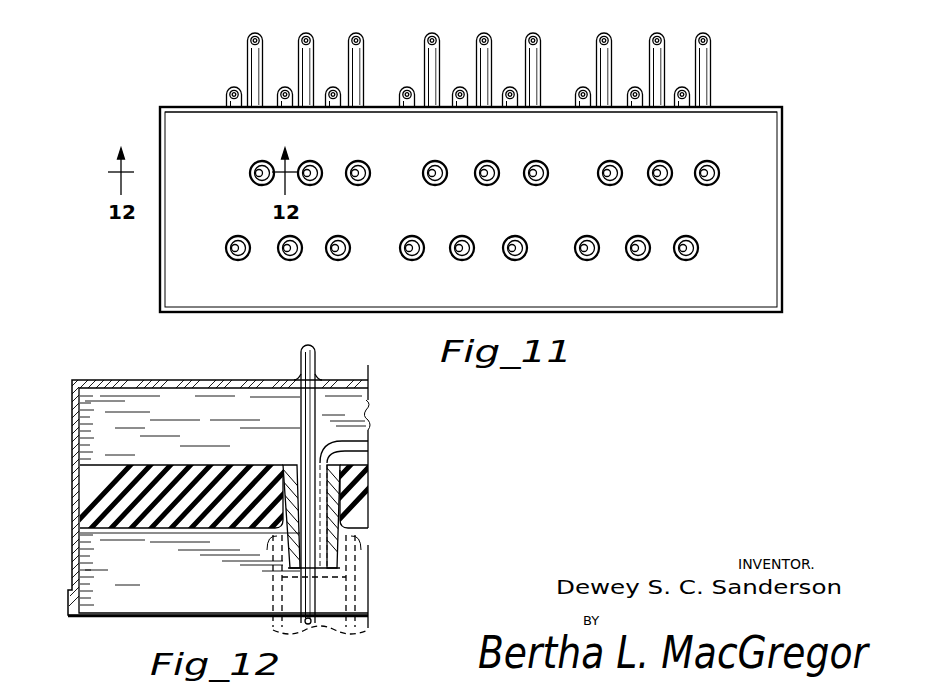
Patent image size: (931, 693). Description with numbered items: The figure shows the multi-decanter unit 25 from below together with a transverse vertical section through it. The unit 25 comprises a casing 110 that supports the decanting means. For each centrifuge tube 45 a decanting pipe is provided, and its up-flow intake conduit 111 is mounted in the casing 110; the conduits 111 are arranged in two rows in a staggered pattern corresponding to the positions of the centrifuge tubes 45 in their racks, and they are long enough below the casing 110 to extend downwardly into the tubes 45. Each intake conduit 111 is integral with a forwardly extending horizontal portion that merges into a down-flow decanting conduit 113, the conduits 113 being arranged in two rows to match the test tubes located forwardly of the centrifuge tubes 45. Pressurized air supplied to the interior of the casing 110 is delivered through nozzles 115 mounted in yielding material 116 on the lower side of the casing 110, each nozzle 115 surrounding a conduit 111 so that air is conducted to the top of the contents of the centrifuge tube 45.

In FIG. 11, the multi-decanter unit 25 is at (476, 182).
In FIG. 12, the centrifuge tube 45 is at (352, 593).
In FIG. 11, the casing 110 is at (162, 106).
In FIG. 12, the casing 110 is at (92, 380).
In FIG. 11, the up-flow intake conduit 111 is at (289, 246).
In FIG. 12, the up-flow intake conduit 111 is at (301, 428).
In FIG. 11, the down-flow decanting conduit 113 is at (251, 36).
In FIG. 11, the nozzle 115 is at (253, 165).
In FIG. 12, the nozzle 115 is at (341, 551).
In FIG. 11, the yielding material 116 is at (753, 133).
In FIG. 12, the yielding material 116 is at (83, 500).